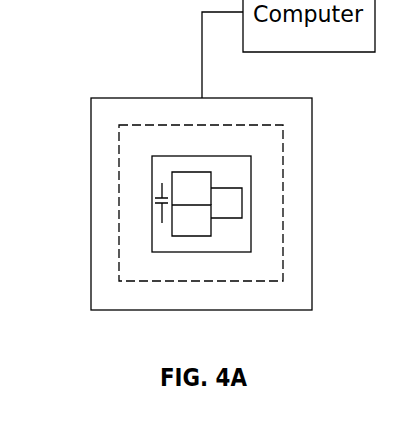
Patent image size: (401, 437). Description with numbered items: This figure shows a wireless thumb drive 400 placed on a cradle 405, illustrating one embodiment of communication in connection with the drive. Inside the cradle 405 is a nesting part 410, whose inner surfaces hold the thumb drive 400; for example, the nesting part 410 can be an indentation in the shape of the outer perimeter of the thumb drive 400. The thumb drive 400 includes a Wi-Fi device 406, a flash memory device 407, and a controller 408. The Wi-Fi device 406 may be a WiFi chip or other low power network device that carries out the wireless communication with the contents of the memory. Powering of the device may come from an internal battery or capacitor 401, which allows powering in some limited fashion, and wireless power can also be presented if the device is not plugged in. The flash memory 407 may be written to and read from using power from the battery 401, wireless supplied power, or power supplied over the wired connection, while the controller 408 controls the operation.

The thumb drive 400 is at (160, 167).
The battery 401 is at (158, 235).
The cradle 405 is at (100, 195).
The Wi-Fi device 406 is at (188, 177).
The flash memory device 407 is at (188, 234).
The controller 408 is at (230, 202).
The nesting part 410 is at (272, 215).